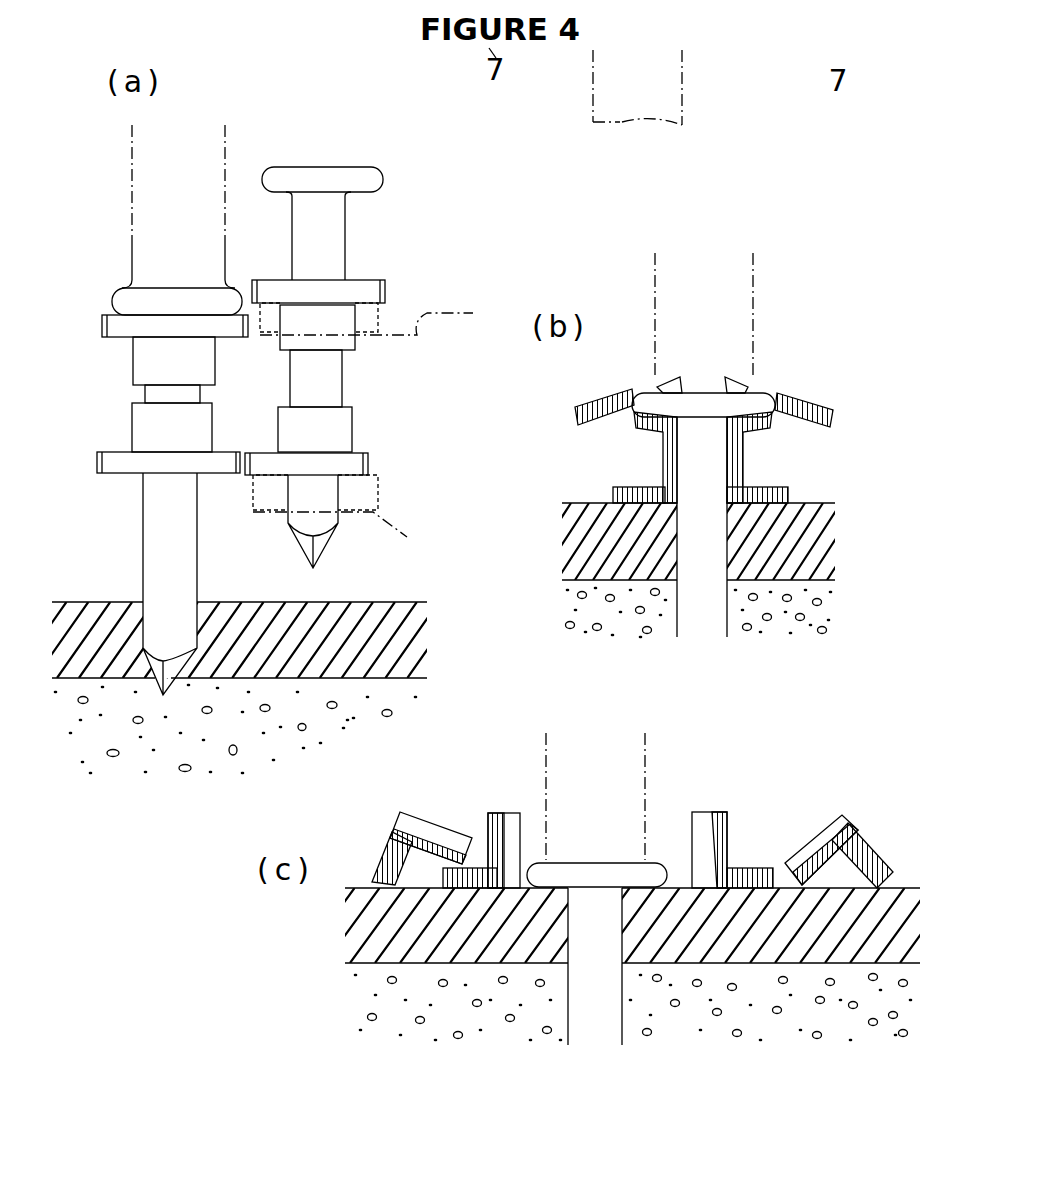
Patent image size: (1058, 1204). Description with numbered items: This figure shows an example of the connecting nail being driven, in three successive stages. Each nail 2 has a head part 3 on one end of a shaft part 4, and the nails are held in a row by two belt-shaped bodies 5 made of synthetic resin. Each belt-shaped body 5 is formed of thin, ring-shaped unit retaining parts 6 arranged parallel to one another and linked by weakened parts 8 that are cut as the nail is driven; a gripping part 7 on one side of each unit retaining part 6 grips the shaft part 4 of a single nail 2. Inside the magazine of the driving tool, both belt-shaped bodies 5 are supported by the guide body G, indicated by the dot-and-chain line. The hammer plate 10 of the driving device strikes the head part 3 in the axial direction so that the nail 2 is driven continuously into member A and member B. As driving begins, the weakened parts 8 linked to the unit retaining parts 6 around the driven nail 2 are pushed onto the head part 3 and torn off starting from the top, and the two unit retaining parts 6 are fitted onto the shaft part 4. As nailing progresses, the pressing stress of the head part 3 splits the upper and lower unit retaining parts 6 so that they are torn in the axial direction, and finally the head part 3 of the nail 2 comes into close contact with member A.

The nail 2 is at (388, 160).
The head part 3 is at (320, 185).
The shaft part 4 is at (328, 213).
The belt-shaped body 5 is at (390, 252).
The unit retaining part 6 is at (100, 330).
The gripping part 7 is at (335, 330).
The weakened part 8 is at (248, 303).
The hammer plate 10 is at (203, 185).
The member A is at (92, 617).
The member B is at (112, 728).
The guide body G is at (376, 431).